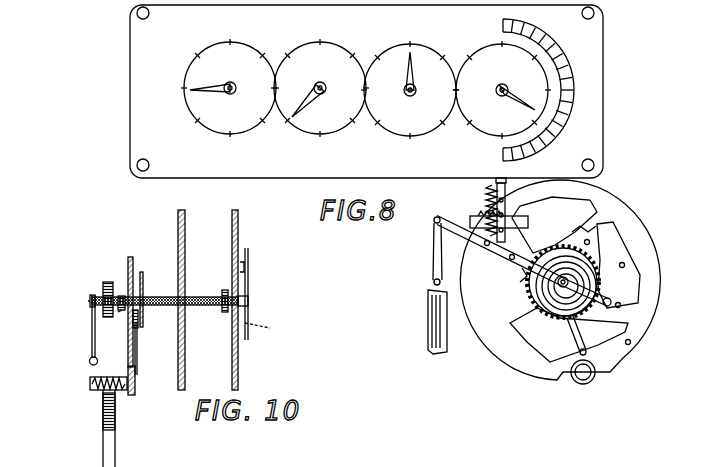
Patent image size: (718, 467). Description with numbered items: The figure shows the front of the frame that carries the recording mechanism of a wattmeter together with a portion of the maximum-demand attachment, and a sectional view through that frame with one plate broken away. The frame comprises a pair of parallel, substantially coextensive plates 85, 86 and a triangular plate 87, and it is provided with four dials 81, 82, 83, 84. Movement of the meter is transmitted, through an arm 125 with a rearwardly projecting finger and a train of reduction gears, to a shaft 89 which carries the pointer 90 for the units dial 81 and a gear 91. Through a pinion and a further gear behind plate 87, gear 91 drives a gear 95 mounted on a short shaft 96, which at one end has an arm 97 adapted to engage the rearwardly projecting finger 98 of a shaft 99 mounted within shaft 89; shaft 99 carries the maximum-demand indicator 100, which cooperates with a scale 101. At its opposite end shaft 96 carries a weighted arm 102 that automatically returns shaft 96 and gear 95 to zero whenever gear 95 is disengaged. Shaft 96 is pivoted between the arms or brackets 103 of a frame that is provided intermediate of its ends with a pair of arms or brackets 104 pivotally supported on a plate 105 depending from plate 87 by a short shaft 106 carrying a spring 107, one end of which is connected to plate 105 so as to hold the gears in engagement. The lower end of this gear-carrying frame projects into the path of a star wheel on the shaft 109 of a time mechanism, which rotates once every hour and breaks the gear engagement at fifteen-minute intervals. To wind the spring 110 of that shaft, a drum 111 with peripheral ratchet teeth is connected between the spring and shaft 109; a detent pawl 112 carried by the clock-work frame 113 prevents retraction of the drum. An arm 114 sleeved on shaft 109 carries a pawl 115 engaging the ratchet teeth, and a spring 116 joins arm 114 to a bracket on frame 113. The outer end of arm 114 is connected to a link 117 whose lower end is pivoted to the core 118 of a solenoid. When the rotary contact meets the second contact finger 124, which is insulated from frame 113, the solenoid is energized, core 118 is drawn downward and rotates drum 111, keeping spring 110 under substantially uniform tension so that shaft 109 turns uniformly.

In FIG. 8, the units dial 81 is at (502, 84).
In FIG. 8, the dial 82 is at (410, 83).
In FIG. 8, the dial 83 is at (320, 82).
In FIG. 8, the dial 84 is at (230, 81).
In FIG. 8, the plate 85 is at (593, 94).
In FIG. 10, the plate 85 is at (232, 214).
In FIG. 10, the plate 86 is at (185, 250).
In FIG. 10, the triangular plate 87 is at (128, 261).
In FIG. 10, the shaft 89 is at (188, 300).
In FIG. 8, the pointer 90 is at (518, 104).
In FIG. 10, the pointer 90 is at (242, 262).
In FIG. 10, the gear 91 is at (143, 282).
In FIG. 10, the gear 95 is at (103, 283).
In FIG. 10, the short shaft 96 is at (122, 296).
In FIG. 10, the arm 97 is at (118, 312).
In FIG. 10, the rearwardly projecting finger 98 is at (138, 323).
In FIG. 10, the shaft 99 is at (250, 310).
In FIG. 10, the maximum-demand indicator 100 is at (248, 272).
In FIG. 8, the scale 101 is at (472, 121).
In FIG. 10, the weighted arm 102 is at (90, 343).
In FIG. 10, the arms or brackets 103 is at (90, 298).
In FIG. 10, the arms or brackets 104 is at (95, 390).
In FIG. 10, the plate 105 is at (137, 355).
In FIG. 10, the short shaft 106 is at (90, 380).
In FIG. 10, the spring 107 is at (101, 393).
In FIG. 8, the shaft 109 is at (568, 279).
In FIG. 8, the spring 110 is at (542, 310).
In FIG. 8, the drum 111 is at (583, 250).
In FIG. 8, the detent pawl 112 is at (622, 300).
In FIG. 8, the frame 113 is at (648, 242).
In FIG. 8, the arm 114 is at (500, 256).
In FIG. 8, the pawl 115 is at (522, 276).
In FIG. 8, the spring 116 is at (507, 203).
In FIG. 8, the link 117 is at (433, 258).
In FIG. 8, the core 118 is at (428, 318).
In FIG. 8, the second contact finger 124 is at (515, 226).
In FIG. 8, the arm 125 is at (585, 228).